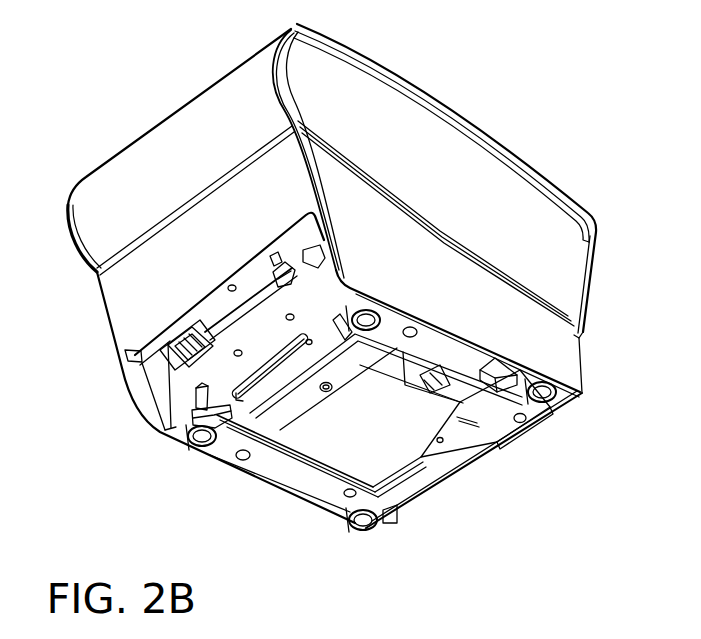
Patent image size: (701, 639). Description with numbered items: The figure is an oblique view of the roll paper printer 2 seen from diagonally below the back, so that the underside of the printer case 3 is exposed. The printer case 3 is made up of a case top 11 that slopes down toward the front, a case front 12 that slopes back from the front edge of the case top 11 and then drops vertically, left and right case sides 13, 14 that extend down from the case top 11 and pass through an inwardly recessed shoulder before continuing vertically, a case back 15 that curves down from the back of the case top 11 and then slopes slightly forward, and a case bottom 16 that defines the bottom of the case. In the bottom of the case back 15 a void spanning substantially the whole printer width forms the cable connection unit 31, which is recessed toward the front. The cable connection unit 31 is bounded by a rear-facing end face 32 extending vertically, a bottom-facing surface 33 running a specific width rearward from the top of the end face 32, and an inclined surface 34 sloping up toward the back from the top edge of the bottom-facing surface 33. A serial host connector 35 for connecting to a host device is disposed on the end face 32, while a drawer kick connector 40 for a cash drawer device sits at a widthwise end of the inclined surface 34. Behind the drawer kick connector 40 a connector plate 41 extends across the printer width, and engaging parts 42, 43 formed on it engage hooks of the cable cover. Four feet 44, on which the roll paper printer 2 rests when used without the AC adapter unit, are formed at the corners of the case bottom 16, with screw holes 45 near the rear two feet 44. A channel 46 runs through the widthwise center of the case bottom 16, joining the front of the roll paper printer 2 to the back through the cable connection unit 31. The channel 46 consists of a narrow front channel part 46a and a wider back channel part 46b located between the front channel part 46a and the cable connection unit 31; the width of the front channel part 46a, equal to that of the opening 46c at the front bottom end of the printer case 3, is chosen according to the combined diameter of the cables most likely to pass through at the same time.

The roll paper printer 2 is at (603, 81).
The printer case 3 is at (112, 150).
The case top 11 is at (465, 120).
The case front 12 is at (592, 299).
The left case side 13 is at (497, 177).
The right case side 14 is at (143, 432).
The case back 15 is at (254, 209).
The case bottom 16 is at (295, 477).
The cable connection unit 31 is at (225, 302).
The end face 32 is at (225, 437).
The bottom-facing surface 33 is at (191, 414).
The inclined surface 34 is at (193, 393).
The RS-232 connector 35 is at (290, 395).
The drawer kick connector 40 is at (183, 344).
The connector plate 41 is at (273, 260).
The engaging part 42 is at (275, 268).
The engaging part 43 is at (173, 320).
The feet 44 is at (381, 314).
The screw holes 45 is at (412, 332).
The channel 46 is at (462, 449).
The front channel part 46a is at (452, 457).
The back channel part 46b is at (340, 430).
The opening 46c is at (492, 447).